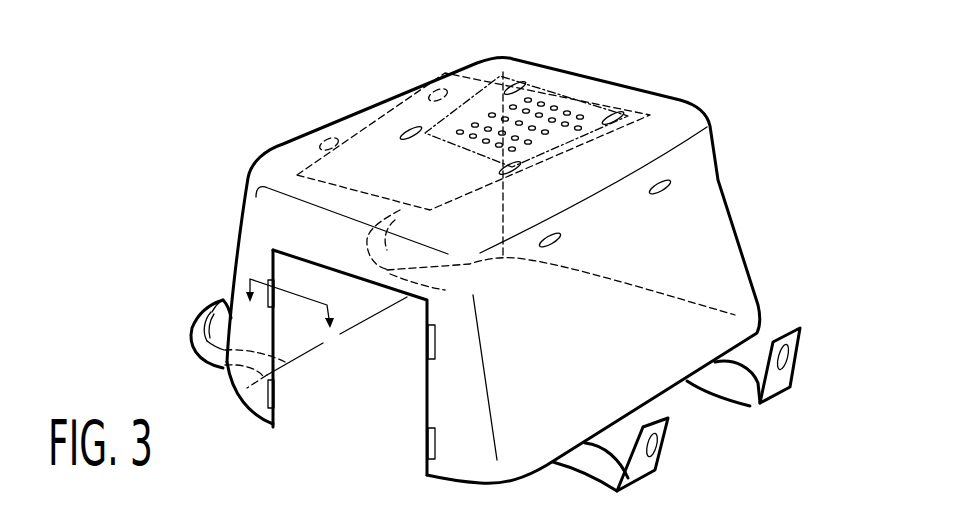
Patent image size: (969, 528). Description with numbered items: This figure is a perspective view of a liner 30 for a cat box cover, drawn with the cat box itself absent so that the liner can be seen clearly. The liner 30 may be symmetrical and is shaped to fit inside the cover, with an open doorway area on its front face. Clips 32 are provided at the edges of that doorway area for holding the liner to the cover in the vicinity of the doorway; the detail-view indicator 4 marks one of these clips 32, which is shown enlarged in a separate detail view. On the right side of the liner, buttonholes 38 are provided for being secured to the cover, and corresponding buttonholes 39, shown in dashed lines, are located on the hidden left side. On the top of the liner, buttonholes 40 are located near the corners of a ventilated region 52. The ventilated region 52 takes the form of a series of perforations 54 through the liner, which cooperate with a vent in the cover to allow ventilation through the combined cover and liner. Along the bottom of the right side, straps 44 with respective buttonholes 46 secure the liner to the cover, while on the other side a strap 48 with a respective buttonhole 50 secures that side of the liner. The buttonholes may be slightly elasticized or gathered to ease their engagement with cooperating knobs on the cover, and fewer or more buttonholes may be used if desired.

The section line 4- 4 is at (289, 319).
The liner 30 is at (256, 119).
The clip 32 is at (276, 292).
The buttonholes 38 is at (650, 192).
The corresponding buttonholes 39 is at (432, 96).
The buttonholes 40 is at (612, 118).
The straps 44 is at (773, 387).
The buttonholes 46 is at (778, 357).
The strap 48 is at (207, 353).
The buttonhole 50 is at (200, 327).
The ventilated region 52 is at (600, 92).
The perforations 54 is at (589, 110).